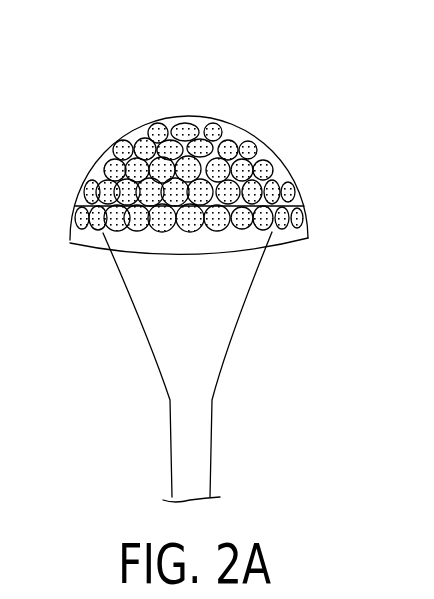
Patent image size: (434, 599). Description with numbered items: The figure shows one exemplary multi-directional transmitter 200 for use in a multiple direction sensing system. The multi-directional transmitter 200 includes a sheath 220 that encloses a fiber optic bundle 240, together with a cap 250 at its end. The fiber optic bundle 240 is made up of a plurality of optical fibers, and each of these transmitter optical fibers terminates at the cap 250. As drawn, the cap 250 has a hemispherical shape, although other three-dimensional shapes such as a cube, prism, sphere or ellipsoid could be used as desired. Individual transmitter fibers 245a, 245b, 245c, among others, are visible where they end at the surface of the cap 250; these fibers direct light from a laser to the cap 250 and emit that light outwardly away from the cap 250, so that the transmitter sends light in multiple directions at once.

The multi-directional transmitter 200 is at (86, 96).
The cap 250 is at (157, 120).
The transmitter fiber 245a is at (295, 193).
The transmitter fiber 245b is at (303, 218).
The transmitter fiber 245c is at (257, 232).
The sheath 220 is at (203, 392).
The fiber optic bundle 240 is at (216, 367).